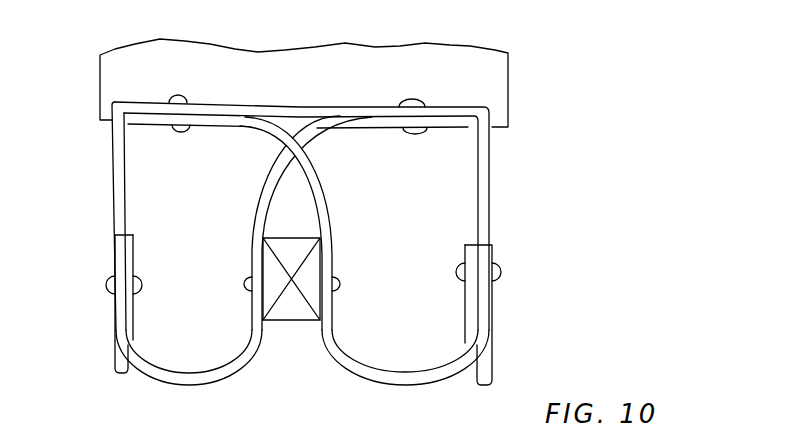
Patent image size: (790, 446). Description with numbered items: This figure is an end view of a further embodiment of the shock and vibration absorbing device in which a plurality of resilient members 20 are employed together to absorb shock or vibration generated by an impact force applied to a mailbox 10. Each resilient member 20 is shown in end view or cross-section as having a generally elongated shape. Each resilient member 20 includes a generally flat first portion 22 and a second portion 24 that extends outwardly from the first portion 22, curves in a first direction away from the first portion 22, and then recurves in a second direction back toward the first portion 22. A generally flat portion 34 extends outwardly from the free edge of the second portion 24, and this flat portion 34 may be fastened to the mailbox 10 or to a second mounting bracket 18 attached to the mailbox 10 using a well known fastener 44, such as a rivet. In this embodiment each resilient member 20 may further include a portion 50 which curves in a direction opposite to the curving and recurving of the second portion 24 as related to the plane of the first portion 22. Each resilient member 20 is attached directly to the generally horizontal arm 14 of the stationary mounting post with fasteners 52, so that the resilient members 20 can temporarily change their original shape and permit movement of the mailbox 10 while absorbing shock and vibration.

The mailbox 10 is at (478, 70).
The generally horizontal arm 14 is at (300, 308).
The second mounting bracket 18 is at (493, 222).
The resilient member 20 is at (104, 398).
The first portion 22 is at (262, 261).
The second portion 24 is at (214, 386).
The generally flat portion 34 is at (121, 259).
The fastener 44 is at (498, 271).
The portion 50 is at (272, 127).
The fasteners 52 is at (246, 284).